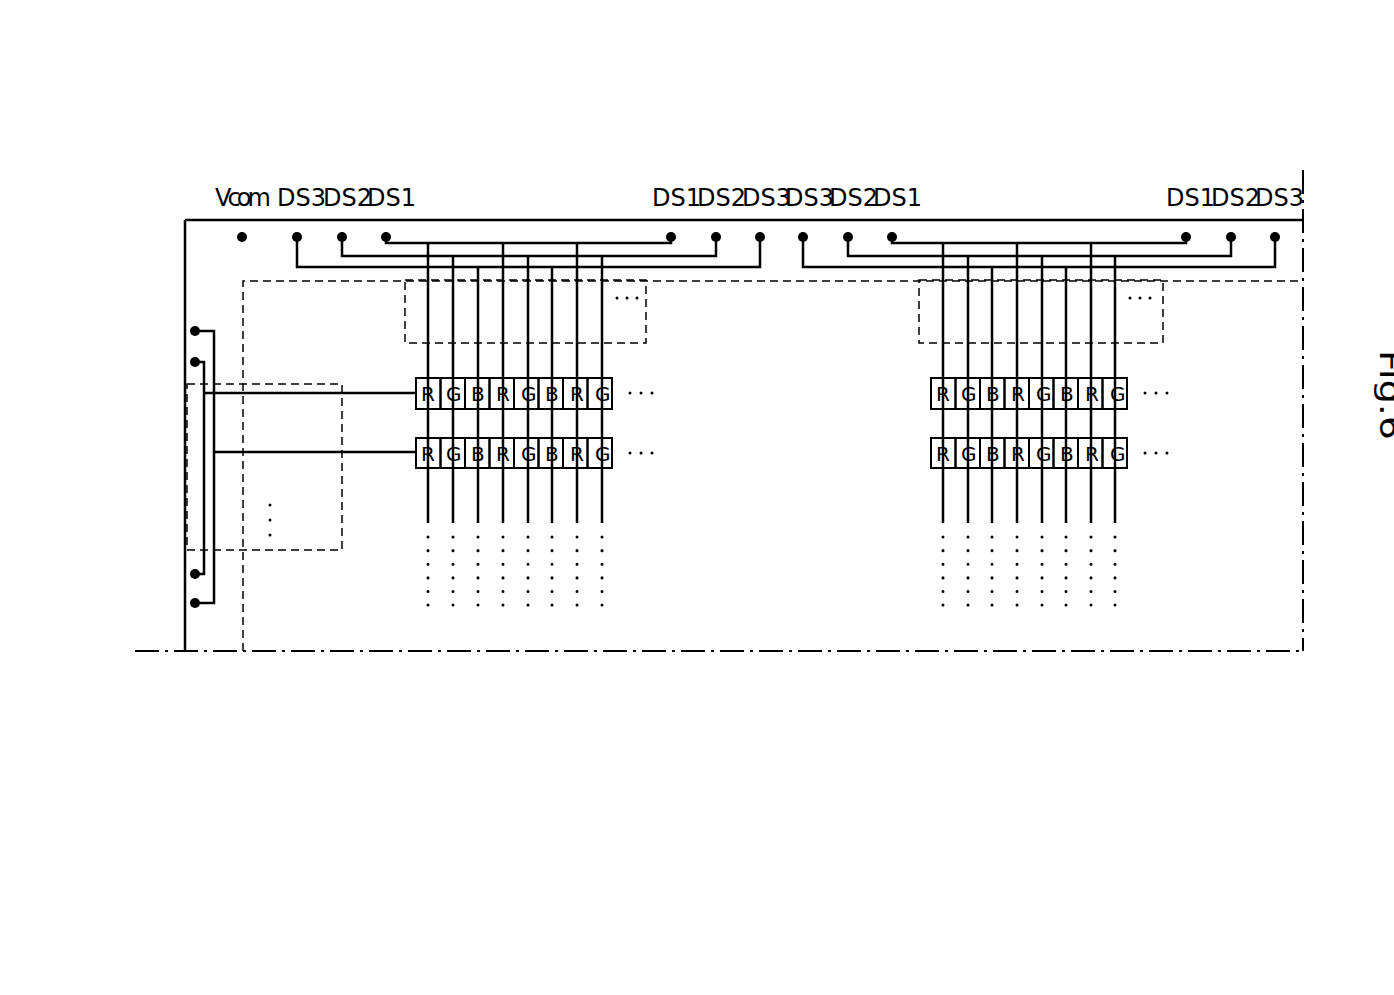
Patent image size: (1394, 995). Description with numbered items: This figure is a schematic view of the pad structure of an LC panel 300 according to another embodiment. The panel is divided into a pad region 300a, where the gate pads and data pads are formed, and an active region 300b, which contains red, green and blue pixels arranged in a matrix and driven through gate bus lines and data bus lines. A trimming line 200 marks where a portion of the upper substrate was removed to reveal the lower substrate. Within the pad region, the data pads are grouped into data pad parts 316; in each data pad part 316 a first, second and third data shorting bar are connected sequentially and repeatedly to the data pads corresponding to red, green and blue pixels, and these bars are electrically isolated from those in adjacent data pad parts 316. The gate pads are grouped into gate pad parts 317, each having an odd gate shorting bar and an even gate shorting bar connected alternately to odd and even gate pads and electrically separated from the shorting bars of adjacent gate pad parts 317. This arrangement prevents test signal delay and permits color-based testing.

The LC panel 300 is at (660, 140).
The pad region 300a is at (199, 284).
The active region 300b is at (1210, 632).
The data pad part 316 is at (645, 282).
The gate pad part 317 is at (210, 548).
The trimming line 200 is at (243, 572).